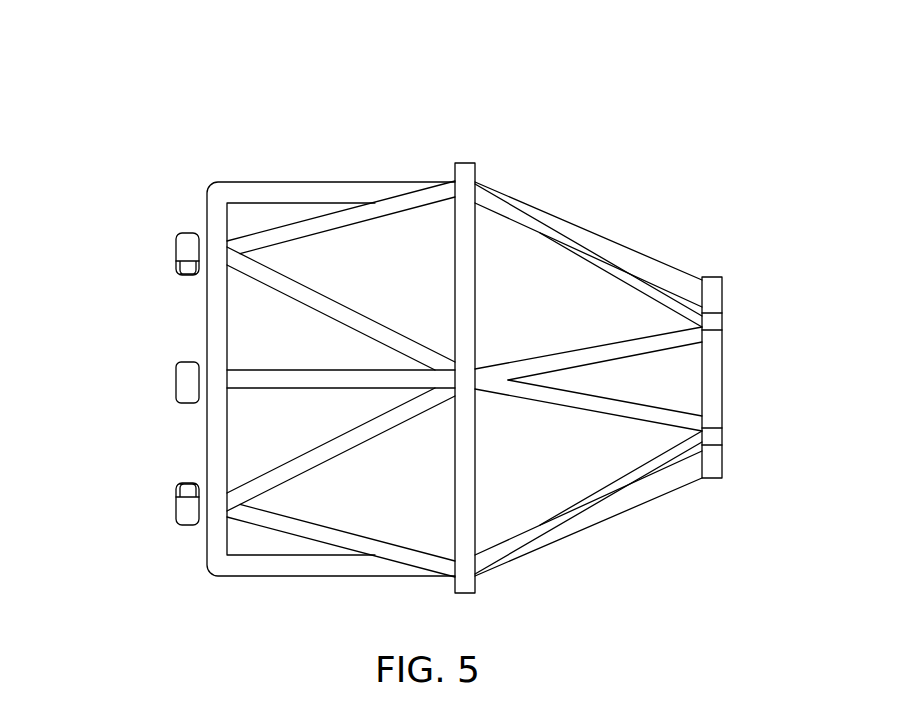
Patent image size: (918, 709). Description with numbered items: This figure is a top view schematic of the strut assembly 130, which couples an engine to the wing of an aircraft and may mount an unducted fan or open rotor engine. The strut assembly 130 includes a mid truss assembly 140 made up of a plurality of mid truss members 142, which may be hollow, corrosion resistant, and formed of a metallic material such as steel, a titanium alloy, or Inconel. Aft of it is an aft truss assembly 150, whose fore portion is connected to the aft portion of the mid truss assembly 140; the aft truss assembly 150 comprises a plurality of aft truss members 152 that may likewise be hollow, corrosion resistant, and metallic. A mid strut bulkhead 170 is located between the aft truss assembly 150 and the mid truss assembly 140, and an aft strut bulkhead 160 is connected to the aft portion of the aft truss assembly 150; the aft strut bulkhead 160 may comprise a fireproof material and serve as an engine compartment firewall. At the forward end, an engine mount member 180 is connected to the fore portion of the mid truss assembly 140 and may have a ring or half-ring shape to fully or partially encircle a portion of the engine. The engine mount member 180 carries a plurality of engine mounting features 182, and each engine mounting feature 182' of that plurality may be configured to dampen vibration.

The strut assembly 130 is at (513, 96).
The mid truss assembly 140 is at (311, 170).
The plurality of mid truss members 142 is at (380, 181).
The aft truss assembly 150 is at (616, 558).
The plurality of aft truss members 152 is at (591, 273).
The aft strut bulkhead 160 is at (722, 378).
The mid strut bulkhead 170 is at (477, 169).
The engine mount member 180 is at (206, 212).
The plurality of engine mounting features 182 is at (149, 499).
The engine mounting feature 182' is at (149, 252).